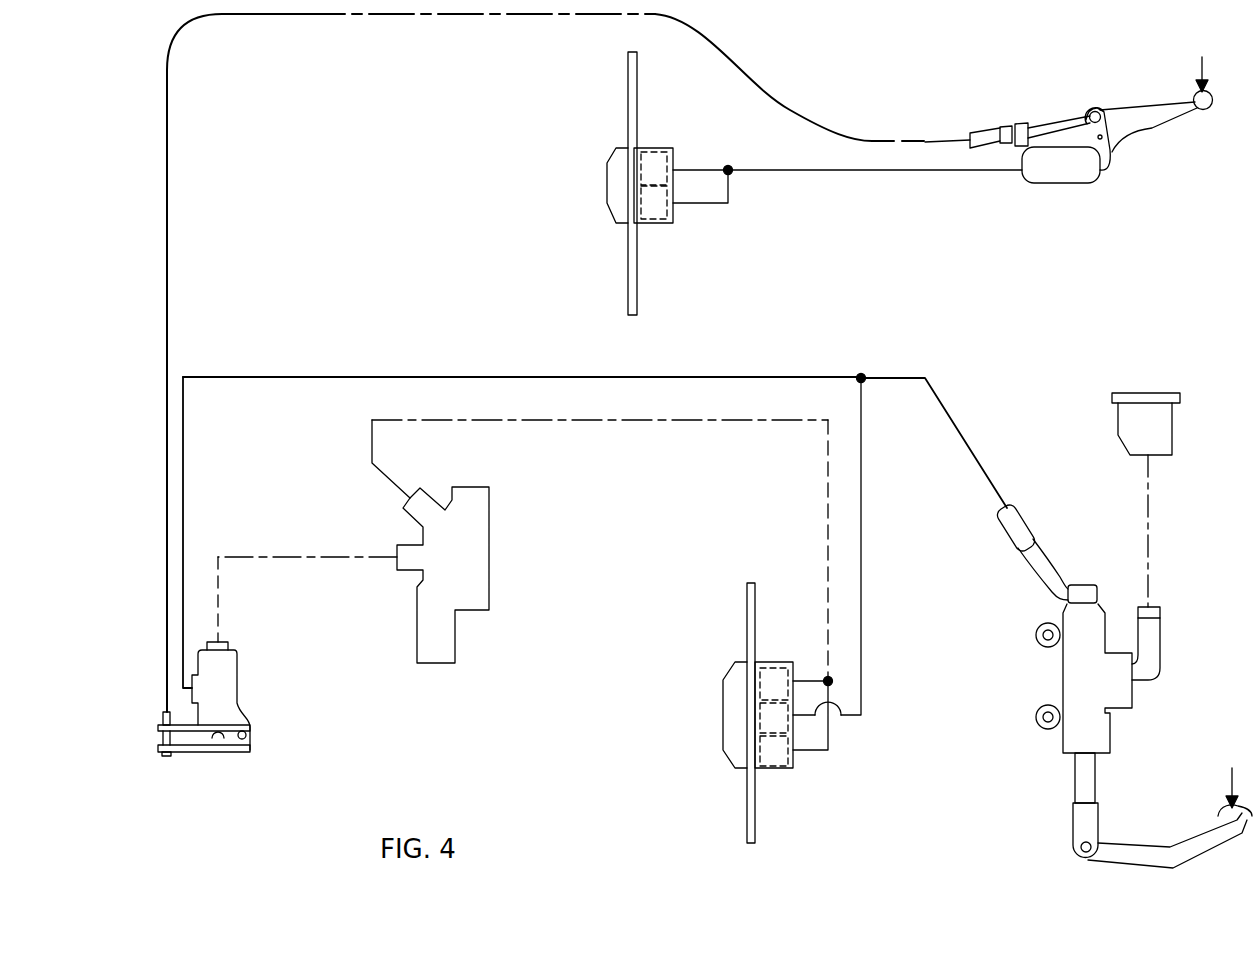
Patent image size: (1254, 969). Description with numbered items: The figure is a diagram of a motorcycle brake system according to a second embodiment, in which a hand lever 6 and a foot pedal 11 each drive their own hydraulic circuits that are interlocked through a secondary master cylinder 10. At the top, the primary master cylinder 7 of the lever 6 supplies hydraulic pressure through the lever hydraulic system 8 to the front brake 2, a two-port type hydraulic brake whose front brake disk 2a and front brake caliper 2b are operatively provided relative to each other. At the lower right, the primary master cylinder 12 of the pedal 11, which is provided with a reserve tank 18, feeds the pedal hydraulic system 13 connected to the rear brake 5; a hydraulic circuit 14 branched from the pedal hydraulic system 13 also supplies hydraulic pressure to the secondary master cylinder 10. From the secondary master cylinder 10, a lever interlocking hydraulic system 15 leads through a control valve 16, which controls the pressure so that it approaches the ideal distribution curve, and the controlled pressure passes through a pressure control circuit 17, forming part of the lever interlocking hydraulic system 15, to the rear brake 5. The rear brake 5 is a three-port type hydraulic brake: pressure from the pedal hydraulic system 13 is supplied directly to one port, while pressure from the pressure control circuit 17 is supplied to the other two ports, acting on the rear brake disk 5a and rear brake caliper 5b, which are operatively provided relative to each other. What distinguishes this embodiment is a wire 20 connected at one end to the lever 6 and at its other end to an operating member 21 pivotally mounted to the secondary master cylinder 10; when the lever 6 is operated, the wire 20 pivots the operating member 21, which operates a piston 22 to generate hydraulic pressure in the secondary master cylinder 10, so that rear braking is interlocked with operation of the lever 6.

The front brake 2 is at (658, 131).
The front brake disk 2a is at (628, 70).
The front brake caliper 2b is at (612, 177).
The rear brake 5 is at (708, 776).
The rear brake disk 5a is at (747, 612).
The rear brake caliper 5b is at (729, 697).
The lever 6 is at (1165, 136).
The primary master cylinder 7 is at (1058, 184).
The lever hydraulic system 8 is at (916, 172).
The secondary master cylinder 10 is at (228, 667).
The pedal 11 is at (1225, 805).
The primary master cylinder 12 is at (1073, 677).
The pedal hydraulic system 13 is at (955, 425).
The hydraulic circuit 14 is at (418, 377).
The lever interlocking hydraulic system 15 is at (271, 556).
The control valve 16 is at (487, 546).
The pressure control circuit 17 is at (616, 425).
The reserve tank 18 is at (1168, 455).
The wire 20 is at (775, 93).
The operating member 21 is at (182, 753).
The piston 22 is at (225, 741).